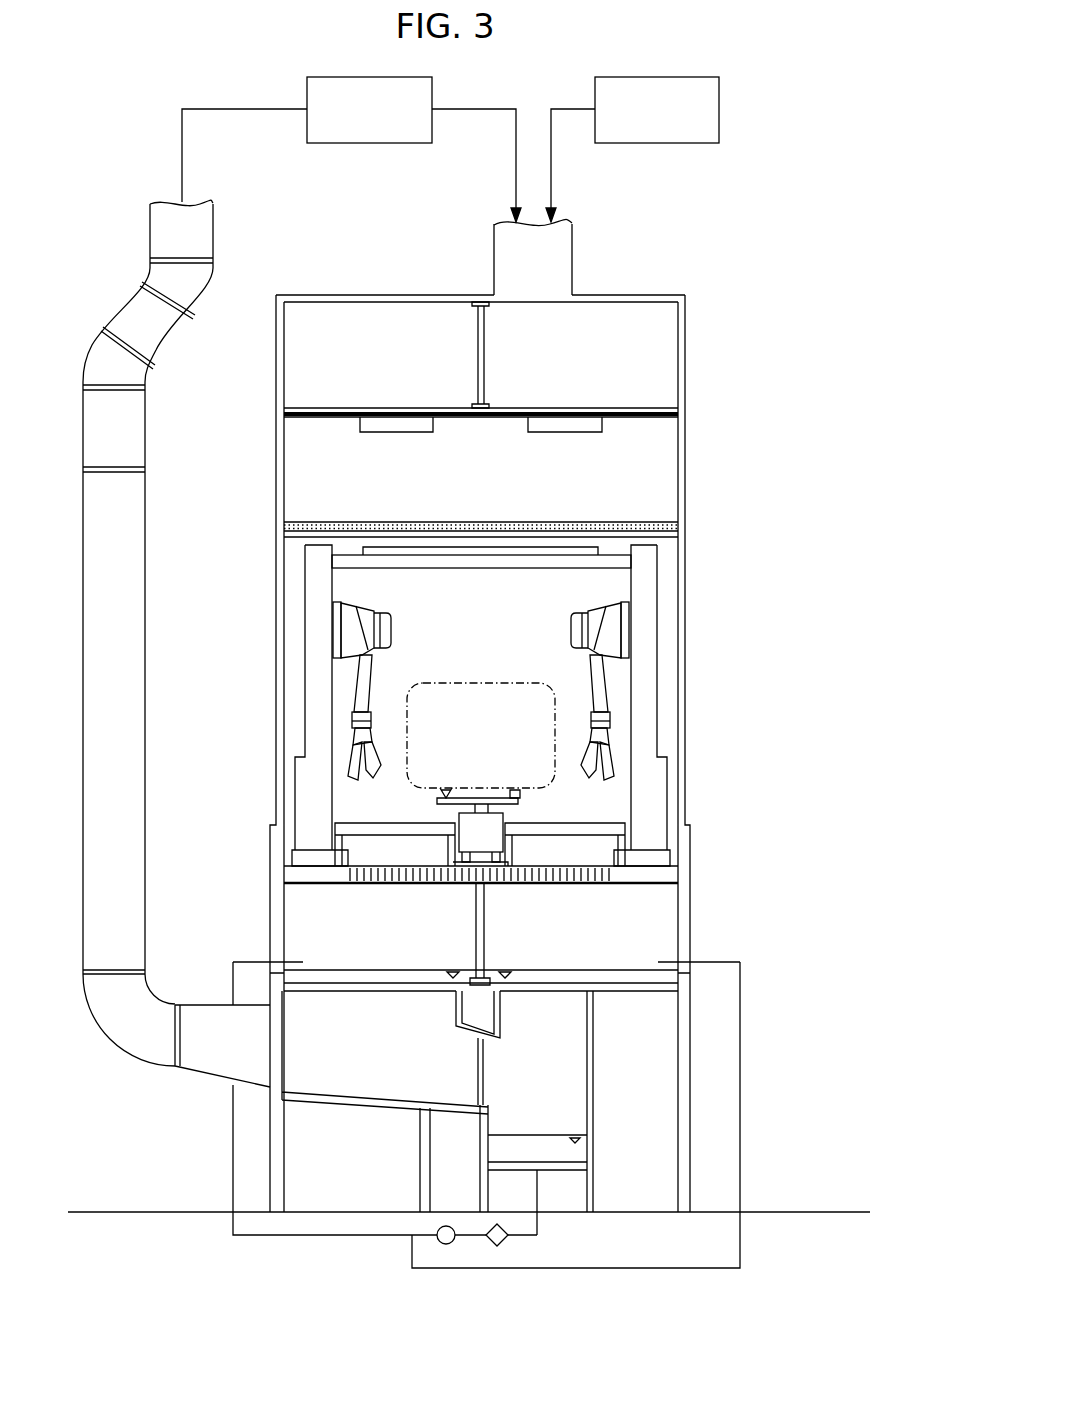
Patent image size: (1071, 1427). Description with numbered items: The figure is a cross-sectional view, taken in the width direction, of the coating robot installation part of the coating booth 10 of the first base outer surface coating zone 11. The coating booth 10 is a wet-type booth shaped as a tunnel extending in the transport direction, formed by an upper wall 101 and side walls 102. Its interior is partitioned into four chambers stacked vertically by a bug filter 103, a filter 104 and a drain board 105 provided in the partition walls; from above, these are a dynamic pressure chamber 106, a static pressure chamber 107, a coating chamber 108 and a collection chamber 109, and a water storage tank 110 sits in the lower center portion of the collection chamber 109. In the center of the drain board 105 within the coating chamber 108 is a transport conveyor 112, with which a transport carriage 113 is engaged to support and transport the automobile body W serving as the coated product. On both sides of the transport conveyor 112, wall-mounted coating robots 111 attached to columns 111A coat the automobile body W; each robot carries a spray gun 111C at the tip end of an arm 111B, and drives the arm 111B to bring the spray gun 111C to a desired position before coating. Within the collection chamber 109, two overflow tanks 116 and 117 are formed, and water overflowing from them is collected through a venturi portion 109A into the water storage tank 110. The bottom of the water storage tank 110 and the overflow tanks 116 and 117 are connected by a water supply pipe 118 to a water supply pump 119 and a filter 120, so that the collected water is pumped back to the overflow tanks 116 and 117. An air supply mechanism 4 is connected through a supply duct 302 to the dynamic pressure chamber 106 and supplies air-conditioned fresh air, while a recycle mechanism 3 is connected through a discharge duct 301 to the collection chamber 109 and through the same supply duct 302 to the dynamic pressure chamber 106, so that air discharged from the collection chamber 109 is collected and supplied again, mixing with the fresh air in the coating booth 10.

The recycle mechanism 3 is at (392, 77).
The air supply mechanism 4 is at (680, 77).
The coating booth 10 is at (698, 244).
The first base outer surface coating zone 11 is at (786, 150).
The upper wall 101 is at (614, 293).
The side walls 102 is at (276, 371).
The bug filter 103 is at (403, 420).
The filter 104 is at (537, 522).
The drain board 105 is at (578, 875).
The dynamic pressure chamber 106 is at (375, 340).
The static pressure chamber 107 is at (313, 463).
The coating chamber 108 is at (378, 590).
The collection chamber 109 is at (308, 919).
The venturi portion 109A is at (476, 1010).
The water storage tank 110 is at (552, 1100).
The wall-mounted coating robots 111 is at (350, 625).
The columns 111A is at (315, 707).
The arm 111B is at (362, 677).
The spray gun 111C is at (347, 743).
The transport conveyor 112 is at (498, 866).
The transport carriage 113 is at (476, 840).
The overflow tank 116 is at (307, 943).
The overflow tank 117 is at (653, 933).
The water supply pipe 118 is at (290, 1237).
The water supply pump 119 is at (446, 1245).
The filter 120 is at (497, 1247).
The discharge duct 301 is at (120, 1033).
The supply duct 302 is at (502, 255).
The automobile body W is at (487, 681).